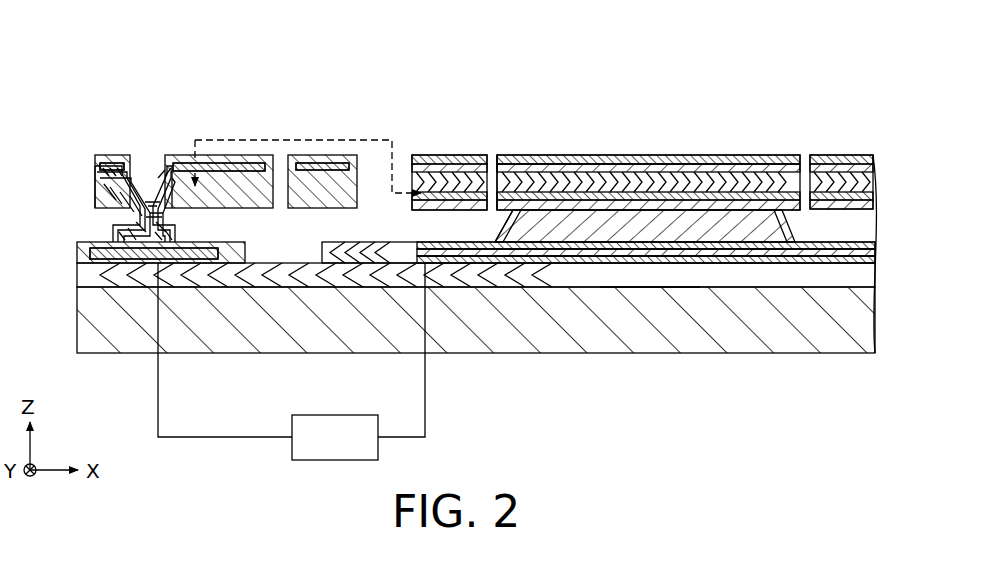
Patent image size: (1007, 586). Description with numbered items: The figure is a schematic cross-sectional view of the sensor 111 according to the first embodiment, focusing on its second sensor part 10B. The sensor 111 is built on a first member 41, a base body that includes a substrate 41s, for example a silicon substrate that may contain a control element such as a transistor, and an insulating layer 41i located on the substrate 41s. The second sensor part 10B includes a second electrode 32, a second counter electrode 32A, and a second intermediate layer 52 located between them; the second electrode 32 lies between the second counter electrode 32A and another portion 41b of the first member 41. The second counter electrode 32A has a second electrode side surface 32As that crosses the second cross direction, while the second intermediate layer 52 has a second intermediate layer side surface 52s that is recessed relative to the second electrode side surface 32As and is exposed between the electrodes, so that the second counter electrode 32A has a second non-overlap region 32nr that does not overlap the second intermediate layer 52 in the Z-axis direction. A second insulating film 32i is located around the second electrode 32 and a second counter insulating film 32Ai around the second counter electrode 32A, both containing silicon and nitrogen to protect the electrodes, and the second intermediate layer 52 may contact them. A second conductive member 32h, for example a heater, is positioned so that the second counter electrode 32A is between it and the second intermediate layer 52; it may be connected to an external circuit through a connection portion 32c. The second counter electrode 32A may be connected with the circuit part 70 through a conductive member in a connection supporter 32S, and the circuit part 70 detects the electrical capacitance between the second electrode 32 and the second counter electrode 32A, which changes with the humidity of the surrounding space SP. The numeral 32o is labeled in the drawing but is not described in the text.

The second sensor part 10B is at (779, 144).
The sensor 111 is at (846, 111).
The space SP is at (696, 88).
The second electrode 32 is at (708, 246).
The second counter electrode 32A is at (650, 193).
The second counter insulating film 32Ai is at (602, 190).
The second electrode side surface 32As is at (492, 198).
The connection portion 32c is at (333, 167).
The second conductive member 32h is at (712, 163).
The second insulating film 32i is at (735, 250).
The second non-overlap region 32nr is at (517, 200).
The outer portion 32o is at (470, 158).
The connection supporter 32S is at (170, 165).
The first member 41 is at (288, 384).
The insulating layer 41i is at (220, 273).
The substrate 41s is at (265, 318).
The portion of the first member 41b is at (630, 283).
The second intermediate layer 52 is at (553, 244).
The second intermediate layer side surface 52s is at (510, 238).
The circuit part 70 is at (290, 448).